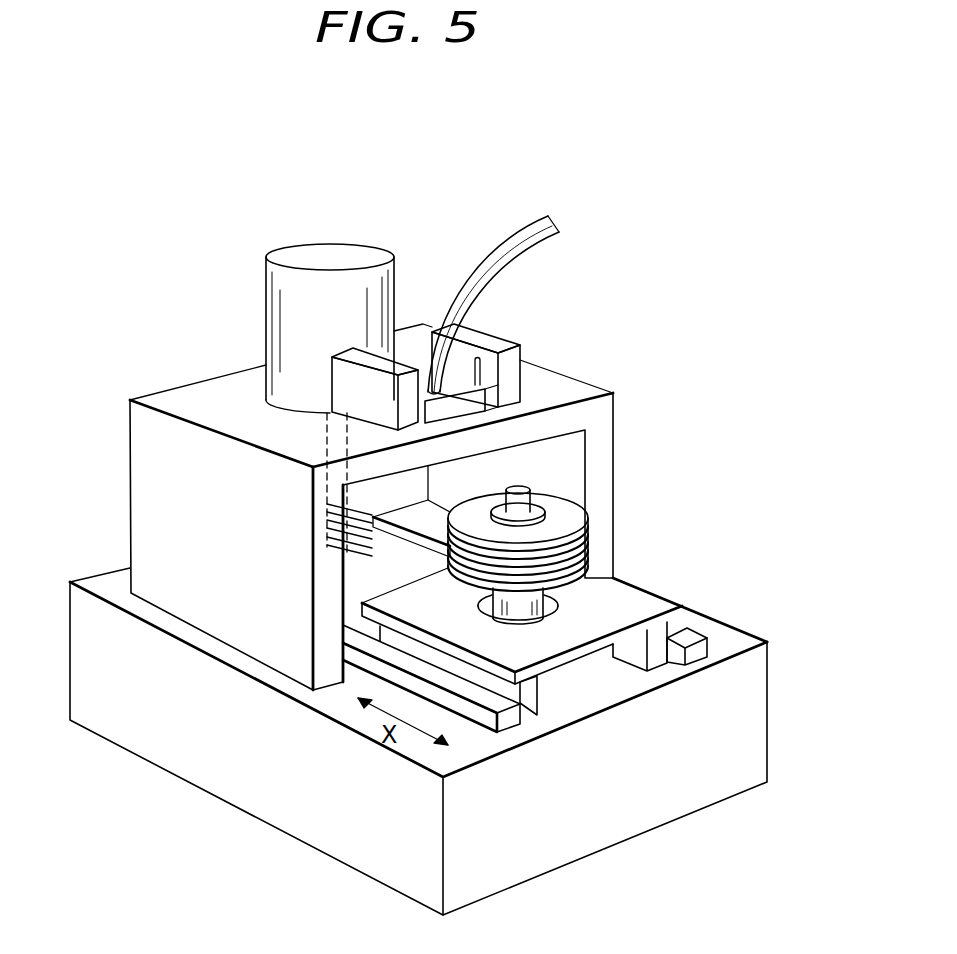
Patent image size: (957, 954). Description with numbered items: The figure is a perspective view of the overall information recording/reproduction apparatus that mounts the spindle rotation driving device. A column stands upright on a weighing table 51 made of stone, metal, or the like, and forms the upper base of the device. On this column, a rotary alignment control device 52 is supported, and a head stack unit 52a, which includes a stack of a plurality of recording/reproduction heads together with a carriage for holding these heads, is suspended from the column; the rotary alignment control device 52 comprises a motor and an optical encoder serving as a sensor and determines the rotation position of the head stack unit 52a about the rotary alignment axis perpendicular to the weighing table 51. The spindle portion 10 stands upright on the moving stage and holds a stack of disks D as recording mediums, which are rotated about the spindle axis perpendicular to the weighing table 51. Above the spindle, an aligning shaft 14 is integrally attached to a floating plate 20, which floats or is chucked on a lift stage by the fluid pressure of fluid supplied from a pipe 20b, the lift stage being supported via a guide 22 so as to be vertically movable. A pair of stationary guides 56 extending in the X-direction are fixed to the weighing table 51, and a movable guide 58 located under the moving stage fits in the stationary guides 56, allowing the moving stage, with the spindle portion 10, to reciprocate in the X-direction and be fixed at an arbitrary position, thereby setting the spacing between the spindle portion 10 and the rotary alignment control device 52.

The spindle portion 10 is at (553, 606).
The aligning shaft 14 is at (518, 487).
The disks D is at (590, 568).
The floating plate 20 is at (458, 388).
The pipe 20b is at (545, 220).
The guide 22 is at (488, 340).
The weighing table 51 is at (740, 717).
The rotary alignment control device 52 is at (330, 252).
The head stack unit 52a is at (324, 543).
The stationary guides 56 is at (700, 648).
The movable guide 58 is at (533, 699).